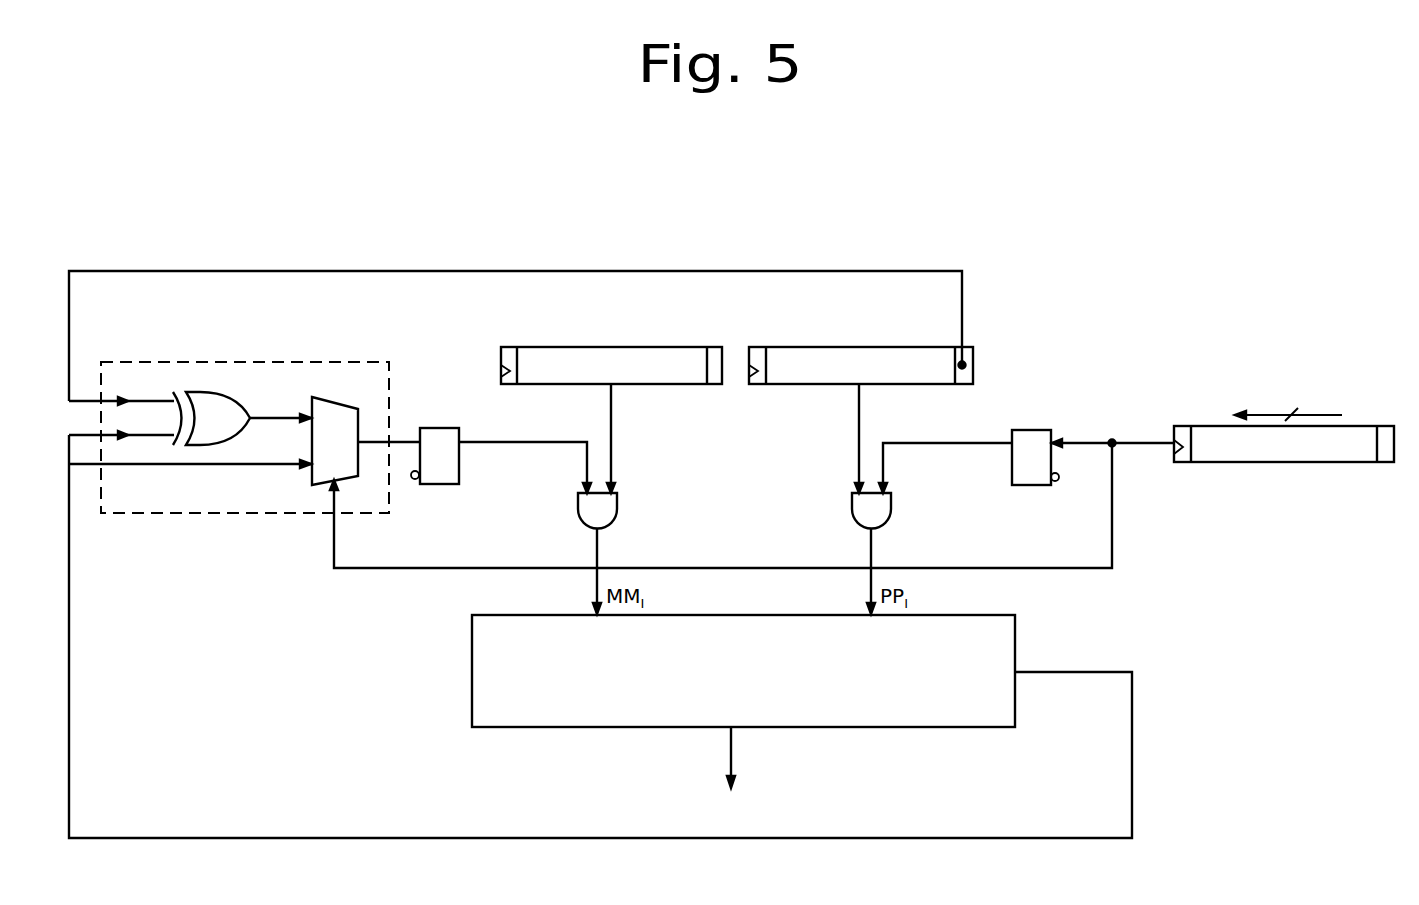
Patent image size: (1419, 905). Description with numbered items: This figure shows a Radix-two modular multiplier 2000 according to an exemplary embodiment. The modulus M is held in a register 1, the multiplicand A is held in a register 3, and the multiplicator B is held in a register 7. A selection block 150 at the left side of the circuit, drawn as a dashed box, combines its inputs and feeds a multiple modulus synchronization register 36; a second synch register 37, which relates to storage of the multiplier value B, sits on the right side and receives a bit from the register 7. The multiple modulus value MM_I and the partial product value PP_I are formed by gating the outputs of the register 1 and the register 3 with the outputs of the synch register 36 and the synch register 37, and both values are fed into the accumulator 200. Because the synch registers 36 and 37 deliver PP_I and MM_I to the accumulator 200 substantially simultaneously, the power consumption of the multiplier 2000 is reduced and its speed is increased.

The multiplier 2000 is at (1074, 231).
The selection block (XOR gate and multiplexer) 150 is at (245, 513).
The multiple modulus synchronization register 36 is at (441, 485).
The synch register 37 is at (1032, 485).
The register 1 is at (553, 347).
The register 3 is at (917, 347).
The register 7 is at (1212, 424).
The accumulator 200 is at (471, 672).